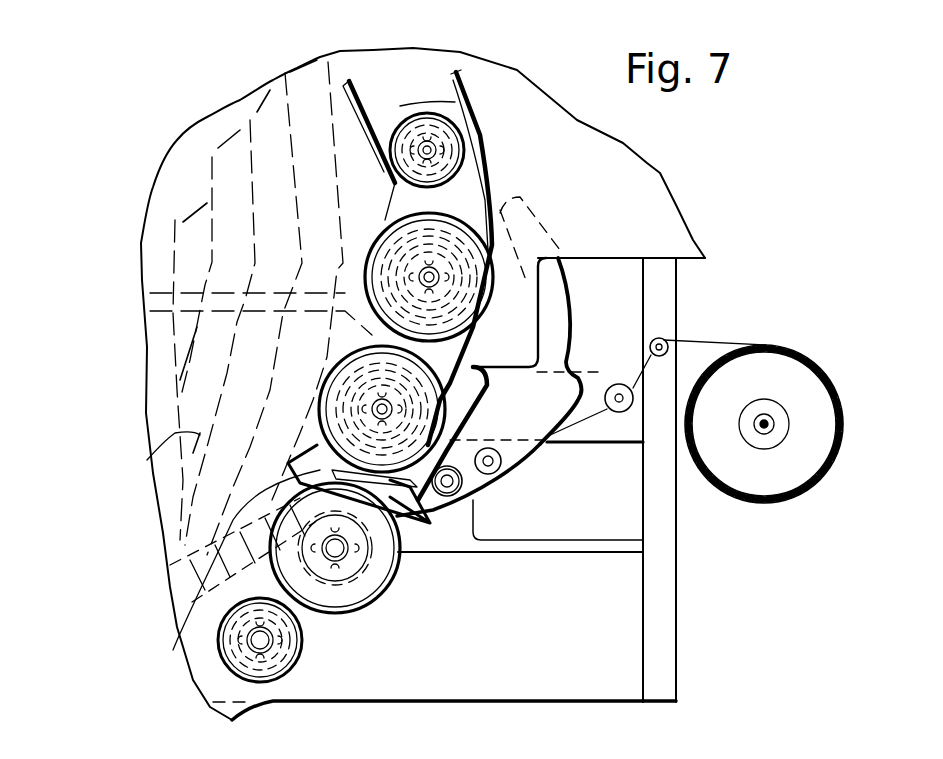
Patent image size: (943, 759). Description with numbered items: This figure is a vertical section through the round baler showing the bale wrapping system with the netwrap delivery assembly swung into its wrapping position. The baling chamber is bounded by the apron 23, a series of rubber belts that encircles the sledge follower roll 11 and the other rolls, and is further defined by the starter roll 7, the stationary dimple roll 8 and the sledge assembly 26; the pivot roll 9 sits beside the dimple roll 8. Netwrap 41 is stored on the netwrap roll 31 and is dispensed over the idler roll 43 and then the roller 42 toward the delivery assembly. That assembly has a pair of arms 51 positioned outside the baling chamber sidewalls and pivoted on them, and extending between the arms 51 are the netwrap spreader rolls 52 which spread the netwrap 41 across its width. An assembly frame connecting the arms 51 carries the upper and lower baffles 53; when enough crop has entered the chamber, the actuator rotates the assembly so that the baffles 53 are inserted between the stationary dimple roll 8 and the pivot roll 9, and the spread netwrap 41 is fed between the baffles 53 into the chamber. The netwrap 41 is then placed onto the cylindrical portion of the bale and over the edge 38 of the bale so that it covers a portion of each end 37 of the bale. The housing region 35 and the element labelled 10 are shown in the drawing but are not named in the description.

The starter roll 7 is at (305, 637).
The stationary dimple roll 8 is at (400, 577).
The pivot roll 9 is at (440, 357).
The roller 10 is at (470, 227).
The sledge follower roll 11 is at (427, 112).
The apron 23 is at (372, 88).
The sledge assembly 26 is at (488, 187).
The netwrap roll 31 is at (770, 503).
The housing with guide paths 35 is at (160, 367).
The end of the bale 37 is at (147, 460).
The edge of the bale 38 is at (213, 580).
The netwrap 41 is at (693, 340).
The roller 42 is at (620, 412).
The idler roll 43 is at (652, 340).
The arms 51 is at (573, 270).
The netwrap spreader rolls 52 is at (478, 478).
The baffle 53 is at (280, 477).